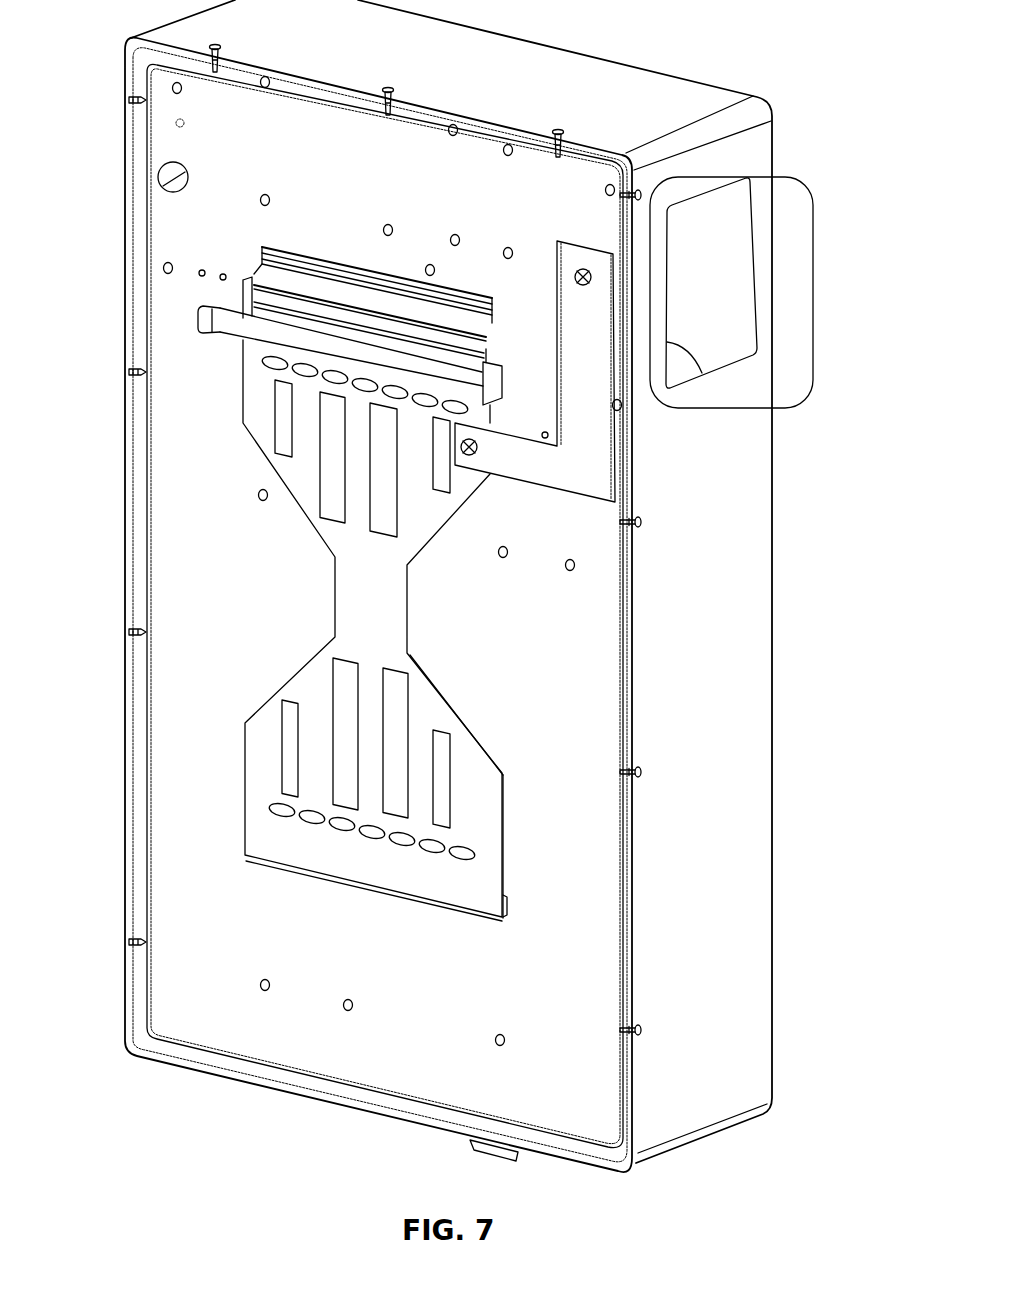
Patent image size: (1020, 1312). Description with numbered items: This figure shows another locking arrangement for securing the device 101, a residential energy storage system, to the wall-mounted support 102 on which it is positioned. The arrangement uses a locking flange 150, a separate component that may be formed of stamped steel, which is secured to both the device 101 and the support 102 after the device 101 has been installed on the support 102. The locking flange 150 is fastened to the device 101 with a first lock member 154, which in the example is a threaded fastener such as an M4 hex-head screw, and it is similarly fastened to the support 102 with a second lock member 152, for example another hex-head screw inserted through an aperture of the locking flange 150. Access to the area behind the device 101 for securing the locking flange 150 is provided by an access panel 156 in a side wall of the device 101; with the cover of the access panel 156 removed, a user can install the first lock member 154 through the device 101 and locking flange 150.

The device 101 is at (758, 1005).
The support 102 is at (353, 870).
The locking flange 150 is at (605, 465).
The second lock member 152 is at (458, 447).
The first lock member 154 is at (583, 267).
The access panel 156 is at (813, 245).